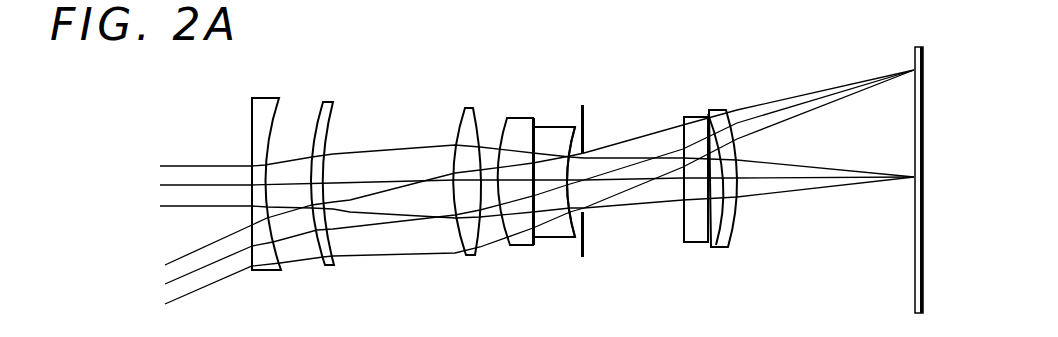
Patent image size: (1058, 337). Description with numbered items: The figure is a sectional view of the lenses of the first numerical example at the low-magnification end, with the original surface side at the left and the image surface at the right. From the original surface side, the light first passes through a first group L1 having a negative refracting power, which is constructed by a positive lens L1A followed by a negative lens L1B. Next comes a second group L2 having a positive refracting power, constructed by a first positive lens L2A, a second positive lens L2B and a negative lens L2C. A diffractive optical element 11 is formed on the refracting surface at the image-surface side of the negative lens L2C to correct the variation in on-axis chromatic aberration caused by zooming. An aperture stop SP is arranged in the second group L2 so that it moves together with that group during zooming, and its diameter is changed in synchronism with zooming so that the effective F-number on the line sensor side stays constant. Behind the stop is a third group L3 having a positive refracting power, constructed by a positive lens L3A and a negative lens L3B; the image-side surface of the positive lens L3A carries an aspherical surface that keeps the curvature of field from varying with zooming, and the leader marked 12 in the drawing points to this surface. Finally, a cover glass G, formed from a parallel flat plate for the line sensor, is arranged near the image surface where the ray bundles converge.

The first group L1 is at (301, 194).
The 1-1 positive lens L1A is at (267, 103).
The 1-1 negative lens L1B is at (330, 100).
The second group L2 is at (539, 196).
The 2-1 positive lens L2A is at (468, 108).
The 2-2 positive lens L2B is at (517, 125).
The 2-1 negative lens L2C is at (553, 130).
The aperture stop SP is at (584, 127).
The third group L3 is at (697, 200).
The 3-1 positive lens L3A is at (692, 118).
The 3-1 negative lens L3B is at (717, 110).
The cover glass G is at (913, 57).
The diffractive optical element 11 is at (577, 197).
The aspheric lens surface in third lens unit 12 is at (718, 210).